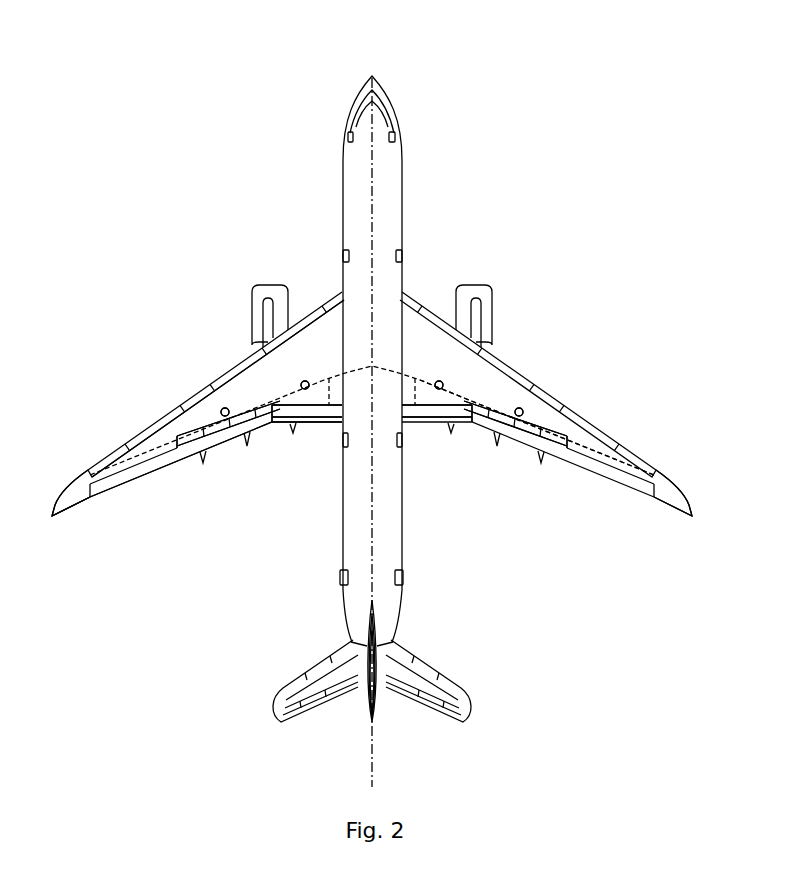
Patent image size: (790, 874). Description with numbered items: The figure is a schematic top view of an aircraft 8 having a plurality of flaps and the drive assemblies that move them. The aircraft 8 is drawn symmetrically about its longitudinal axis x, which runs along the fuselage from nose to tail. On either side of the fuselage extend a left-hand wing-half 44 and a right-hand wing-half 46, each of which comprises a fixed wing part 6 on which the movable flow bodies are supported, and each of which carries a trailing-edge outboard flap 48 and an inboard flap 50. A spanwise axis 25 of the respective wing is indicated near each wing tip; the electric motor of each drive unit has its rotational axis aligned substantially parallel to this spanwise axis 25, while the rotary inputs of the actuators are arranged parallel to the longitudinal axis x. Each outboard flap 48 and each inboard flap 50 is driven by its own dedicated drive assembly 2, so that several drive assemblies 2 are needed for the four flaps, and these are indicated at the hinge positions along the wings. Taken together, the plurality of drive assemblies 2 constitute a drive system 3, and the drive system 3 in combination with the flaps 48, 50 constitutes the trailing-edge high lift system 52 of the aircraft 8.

The aircraft 8 is at (484, 137).
The longitudinal axis x is at (373, 76).
The drive assembly 2 is at (228, 398).
The drive system 3 is at (264, 361).
The fixed wing part 6 is at (538, 407).
The spanwise axis 25 is at (128, 450).
The left-hand wing-half 44 is at (212, 398).
The right-hand wing-half 46 is at (483, 373).
The outboard flap 48 is at (227, 447).
The inboard flap 50 is at (278, 427).
The high lift system 52 is at (226, 521).